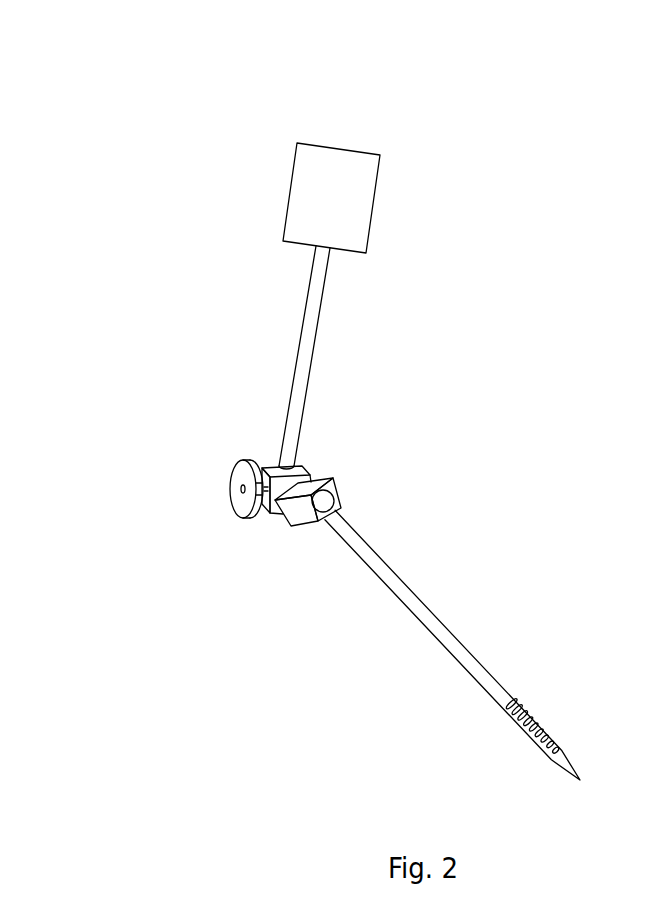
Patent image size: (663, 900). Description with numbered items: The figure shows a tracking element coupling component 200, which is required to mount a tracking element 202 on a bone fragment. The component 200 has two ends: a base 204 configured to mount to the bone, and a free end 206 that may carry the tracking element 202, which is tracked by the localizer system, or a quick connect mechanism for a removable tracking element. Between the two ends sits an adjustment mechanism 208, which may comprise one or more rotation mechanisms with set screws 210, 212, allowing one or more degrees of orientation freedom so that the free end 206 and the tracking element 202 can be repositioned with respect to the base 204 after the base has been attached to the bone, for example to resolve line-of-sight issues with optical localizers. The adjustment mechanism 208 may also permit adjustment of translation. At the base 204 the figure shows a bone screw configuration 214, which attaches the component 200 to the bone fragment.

The tracking element coupling component 200 is at (94, 126).
The tracking element 202 is at (355, 209).
The base 204 is at (527, 674).
The free end 206 is at (358, 279).
The adjustment mechanism 208 is at (326, 454).
The set screw 210 is at (228, 495).
The set screw 212 is at (327, 498).
The bone screw configuration 214 is at (552, 738).